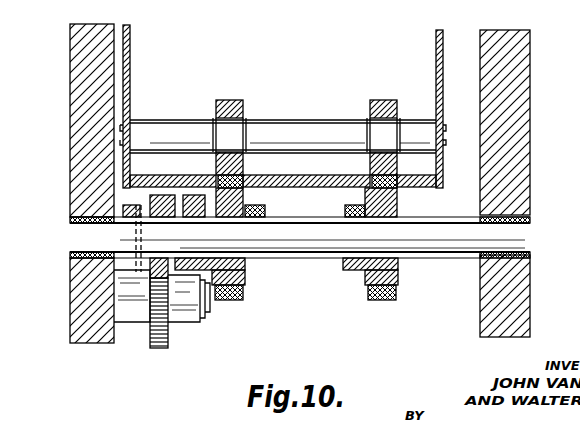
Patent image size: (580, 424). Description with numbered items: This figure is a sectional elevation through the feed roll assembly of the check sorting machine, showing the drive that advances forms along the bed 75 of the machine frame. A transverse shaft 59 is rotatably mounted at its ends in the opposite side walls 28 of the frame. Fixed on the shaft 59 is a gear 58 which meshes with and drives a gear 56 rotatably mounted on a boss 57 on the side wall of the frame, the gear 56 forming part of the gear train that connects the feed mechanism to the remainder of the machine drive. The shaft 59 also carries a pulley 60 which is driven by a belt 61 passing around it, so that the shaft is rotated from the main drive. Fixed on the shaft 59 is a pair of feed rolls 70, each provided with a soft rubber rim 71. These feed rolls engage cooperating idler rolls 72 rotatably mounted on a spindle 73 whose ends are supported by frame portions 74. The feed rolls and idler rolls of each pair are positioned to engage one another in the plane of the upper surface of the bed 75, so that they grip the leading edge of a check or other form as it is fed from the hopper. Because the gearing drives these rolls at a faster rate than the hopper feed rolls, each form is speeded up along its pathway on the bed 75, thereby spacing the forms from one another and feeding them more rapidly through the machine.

The side walls 28 is at (80, 118).
The gear 56 is at (168, 342).
The boss 57 is at (139, 318).
The gear 58 is at (150, 207).
The transverse shaft 59 is at (314, 244).
The pulley 60 is at (189, 298).
The belt 61 is at (198, 187).
The feed rolls 70 is at (238, 272).
The soft rubber rim 71 is at (232, 300).
The idler rolls 72 is at (228, 108).
The spindle 73 is at (284, 134).
The frame portions 74 is at (131, 60).
The bed 75 is at (310, 182).